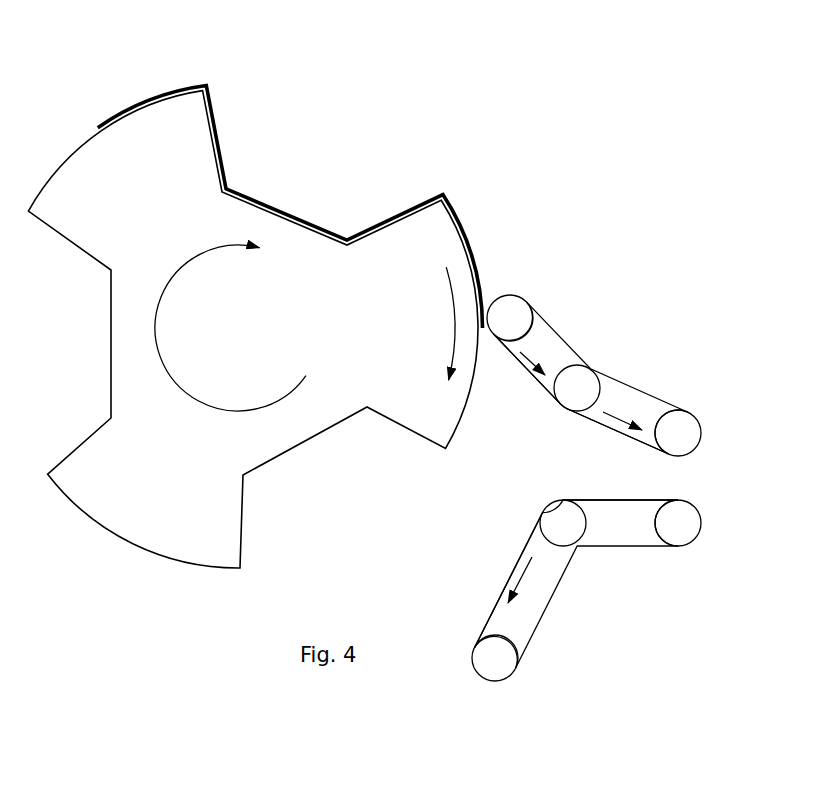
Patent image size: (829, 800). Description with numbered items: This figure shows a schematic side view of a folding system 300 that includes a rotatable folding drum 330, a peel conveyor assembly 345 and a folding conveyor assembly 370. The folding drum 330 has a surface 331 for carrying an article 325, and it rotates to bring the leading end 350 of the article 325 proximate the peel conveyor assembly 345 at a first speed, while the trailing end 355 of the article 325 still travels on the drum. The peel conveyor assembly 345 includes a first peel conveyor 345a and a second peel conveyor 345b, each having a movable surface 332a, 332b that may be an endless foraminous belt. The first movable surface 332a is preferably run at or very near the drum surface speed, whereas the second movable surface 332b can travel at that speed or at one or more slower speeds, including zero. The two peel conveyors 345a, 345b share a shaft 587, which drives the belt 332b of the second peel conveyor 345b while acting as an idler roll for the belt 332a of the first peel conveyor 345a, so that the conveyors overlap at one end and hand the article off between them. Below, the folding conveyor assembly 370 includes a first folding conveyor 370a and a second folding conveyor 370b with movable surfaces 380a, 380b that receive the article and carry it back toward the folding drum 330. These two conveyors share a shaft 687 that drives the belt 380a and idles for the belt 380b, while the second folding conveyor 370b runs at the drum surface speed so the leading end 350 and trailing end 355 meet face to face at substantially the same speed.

The folding system 300 is at (512, 137).
The article 325 is at (357, 235).
The folding drum 330 is at (282, 338).
The surface 331 is at (130, 557).
The movable surface 332a is at (525, 370).
The movable surface 332b is at (642, 447).
The peel conveyor assembly 345 is at (638, 361).
The first peel conveyor 345a is at (558, 337).
The second peel conveyor 345b is at (640, 387).
The leading end 350 is at (480, 268).
The trailing end 355 is at (155, 85).
The folding conveyor assembly 370 is at (601, 604).
The first folding conveyor 370a is at (643, 548).
The second folding conveyor 370b is at (535, 633).
The movable surface 380a is at (620, 500).
The movable surface 380b is at (520, 557).
The shaft 587 is at (580, 387).
The shaft 687 is at (568, 528).